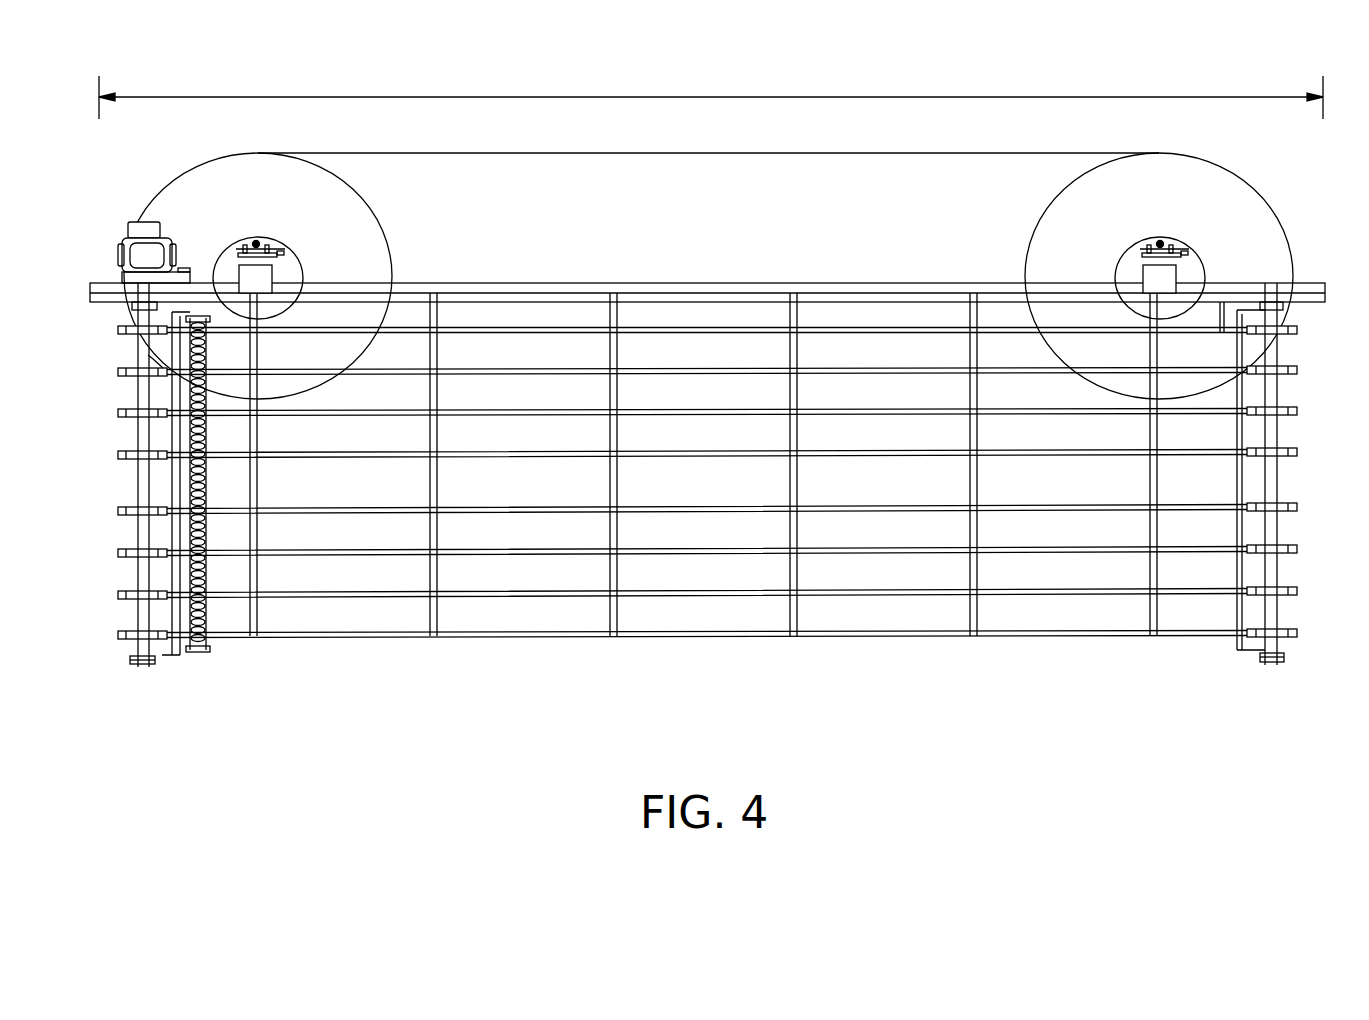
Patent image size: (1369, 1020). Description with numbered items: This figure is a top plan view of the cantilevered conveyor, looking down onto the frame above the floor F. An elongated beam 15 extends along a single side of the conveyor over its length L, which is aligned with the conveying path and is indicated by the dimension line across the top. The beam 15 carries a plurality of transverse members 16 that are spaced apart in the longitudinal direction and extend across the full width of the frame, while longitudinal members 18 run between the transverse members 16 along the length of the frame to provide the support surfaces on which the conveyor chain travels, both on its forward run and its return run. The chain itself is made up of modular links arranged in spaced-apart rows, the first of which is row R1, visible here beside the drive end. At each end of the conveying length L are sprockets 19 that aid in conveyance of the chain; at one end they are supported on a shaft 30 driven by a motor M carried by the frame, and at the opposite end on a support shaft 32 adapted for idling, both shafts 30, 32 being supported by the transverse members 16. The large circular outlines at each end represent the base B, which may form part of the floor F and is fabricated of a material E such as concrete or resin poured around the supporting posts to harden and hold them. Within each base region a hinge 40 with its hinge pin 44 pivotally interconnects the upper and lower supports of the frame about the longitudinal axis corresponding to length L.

The length of the conveyor L is at (684, 96).
The base B is at (952, 152).
The motor M is at (118, 255).
The elongated beam 15 is at (692, 290).
The floor F is at (746, 248).
The transverse members 16 is at (610, 616).
The longitudinal members 18 is at (705, 637).
The sprockets 19 is at (118, 635).
The shaft 30 is at (143, 668).
The support shaft 32 is at (1270, 668).
The row of modular links R1 is at (193, 655).
The material E is at (300, 268).
The hinge 40 is at (278, 236).
The hinge pin 44 is at (245, 257).